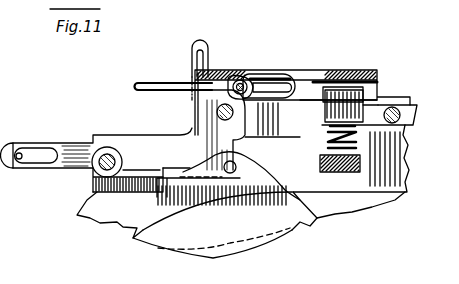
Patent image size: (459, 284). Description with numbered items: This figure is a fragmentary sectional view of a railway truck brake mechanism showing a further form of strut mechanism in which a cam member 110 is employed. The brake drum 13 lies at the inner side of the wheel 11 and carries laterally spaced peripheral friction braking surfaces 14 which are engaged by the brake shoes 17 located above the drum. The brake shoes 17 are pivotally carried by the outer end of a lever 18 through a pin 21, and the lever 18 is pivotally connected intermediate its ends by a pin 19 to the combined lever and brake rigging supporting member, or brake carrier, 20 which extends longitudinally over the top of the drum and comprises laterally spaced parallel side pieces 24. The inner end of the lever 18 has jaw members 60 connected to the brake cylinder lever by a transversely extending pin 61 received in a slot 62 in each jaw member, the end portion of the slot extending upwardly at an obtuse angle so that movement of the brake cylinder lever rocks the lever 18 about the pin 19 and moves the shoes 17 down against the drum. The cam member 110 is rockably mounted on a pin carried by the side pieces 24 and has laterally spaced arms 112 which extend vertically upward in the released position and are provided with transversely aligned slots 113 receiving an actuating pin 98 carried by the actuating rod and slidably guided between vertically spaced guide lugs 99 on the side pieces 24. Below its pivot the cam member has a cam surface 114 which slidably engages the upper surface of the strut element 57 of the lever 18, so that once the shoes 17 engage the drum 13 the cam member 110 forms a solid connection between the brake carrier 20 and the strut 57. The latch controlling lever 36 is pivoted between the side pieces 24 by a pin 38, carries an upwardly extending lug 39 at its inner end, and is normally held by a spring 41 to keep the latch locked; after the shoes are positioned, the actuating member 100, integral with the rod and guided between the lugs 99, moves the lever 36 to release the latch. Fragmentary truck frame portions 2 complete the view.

The frame 2 is at (117, 217).
The wheel 11 is at (80, 208).
The brake drum 13 is at (177, 236).
The peripheral friction braking surfaces 14 is at (317, 219).
The brake shoes 17 is at (198, 203).
The lever 18 is at (77, 140).
The pin 19 is at (111, 146).
The combined lever and brake rigging supporting member 20 is at (394, 195).
The pin 21 is at (231, 174).
The side pieces 24 is at (398, 99).
The latch controlling lever 36 is at (413, 116).
The pin 38 is at (409, 126).
The lug 39 is at (344, 92).
The spring 41 is at (326, 140).
The strut element 57 is at (232, 142).
The jaw members 60 is at (24, 142).
The pin 61 is at (18, 168).
The slot 62 is at (50, 142).
The actuating pin 98 is at (243, 80).
The guide lugs 99 is at (329, 82).
The actuating member 100 is at (312, 103).
The cam member 110 is at (208, 121).
The arms 112 is at (200, 42).
The slots 113 is at (196, 52).
The cam surface 114 is at (212, 128).